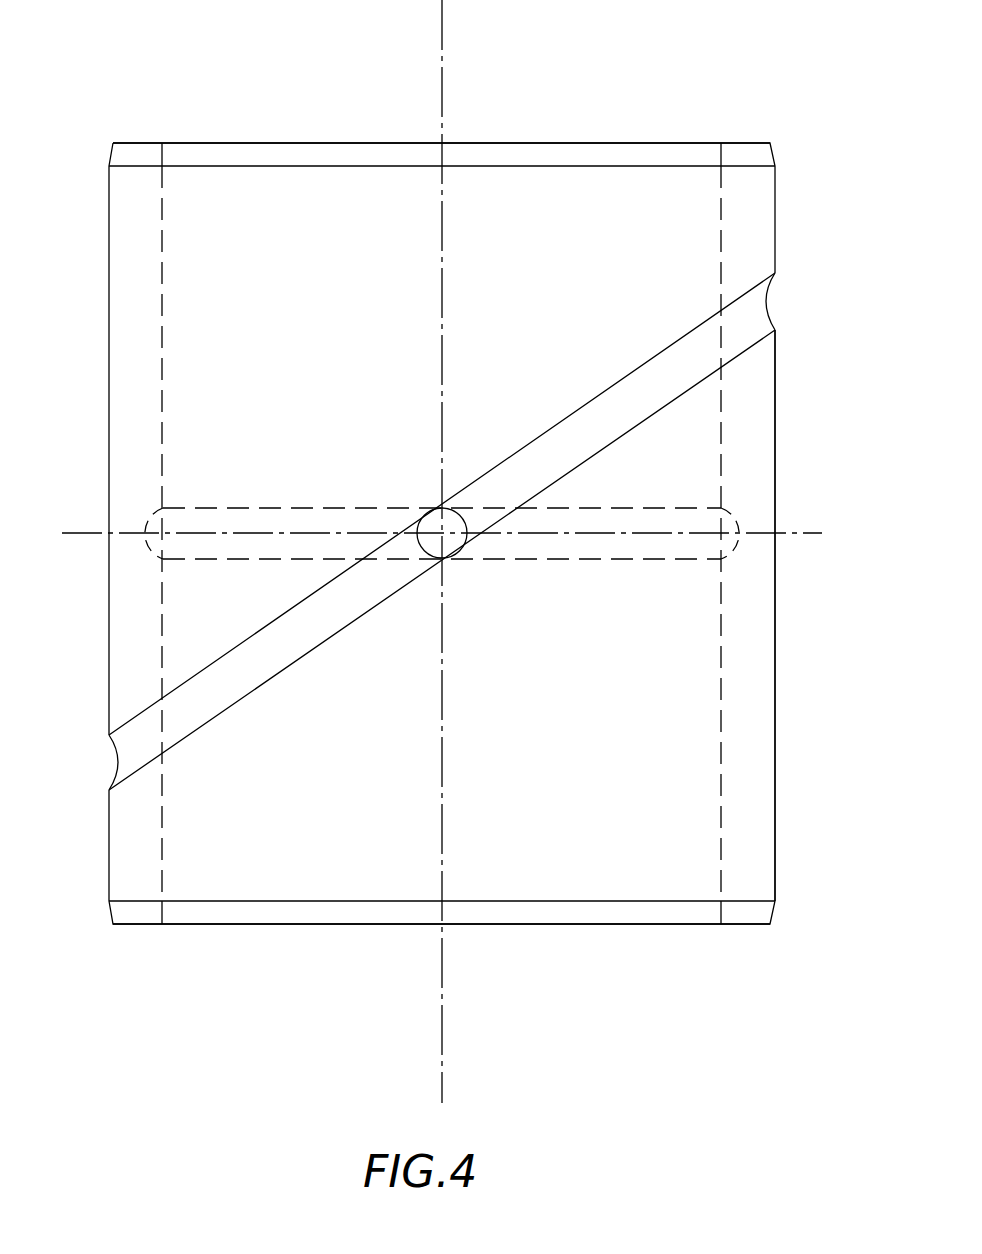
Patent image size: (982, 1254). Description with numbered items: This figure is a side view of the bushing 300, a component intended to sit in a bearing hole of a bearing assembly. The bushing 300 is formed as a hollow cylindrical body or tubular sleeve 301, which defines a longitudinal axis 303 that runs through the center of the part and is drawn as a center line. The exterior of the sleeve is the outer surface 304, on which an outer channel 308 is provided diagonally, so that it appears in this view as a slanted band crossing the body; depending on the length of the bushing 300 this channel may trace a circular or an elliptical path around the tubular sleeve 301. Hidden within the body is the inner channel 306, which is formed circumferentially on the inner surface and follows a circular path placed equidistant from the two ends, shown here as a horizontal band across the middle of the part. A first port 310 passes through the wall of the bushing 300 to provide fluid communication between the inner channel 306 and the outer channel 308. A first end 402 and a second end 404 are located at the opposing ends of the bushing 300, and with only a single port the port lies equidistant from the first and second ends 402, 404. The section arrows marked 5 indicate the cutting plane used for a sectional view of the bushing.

The bushing 300 is at (590, 110).
The tubular sleeve 301 is at (777, 454).
The longitudinal axis 303 is at (440, 969).
The outer surface 304 is at (302, 285).
The inner channel 306 is at (598, 559).
The outer channel 308 is at (636, 366).
The first port 310 is at (415, 535).
The first end 402 is at (290, 135).
The second end 404 is at (494, 940).
The section line 5- 5 is at (811, 552).